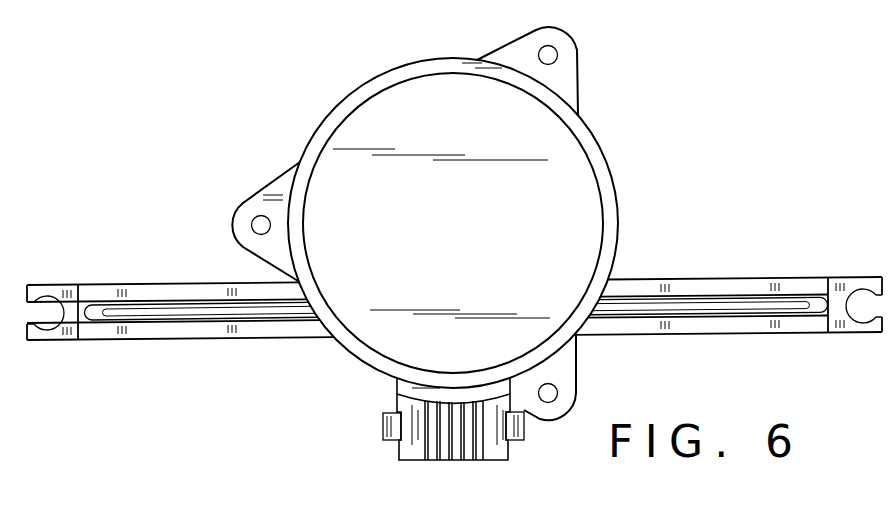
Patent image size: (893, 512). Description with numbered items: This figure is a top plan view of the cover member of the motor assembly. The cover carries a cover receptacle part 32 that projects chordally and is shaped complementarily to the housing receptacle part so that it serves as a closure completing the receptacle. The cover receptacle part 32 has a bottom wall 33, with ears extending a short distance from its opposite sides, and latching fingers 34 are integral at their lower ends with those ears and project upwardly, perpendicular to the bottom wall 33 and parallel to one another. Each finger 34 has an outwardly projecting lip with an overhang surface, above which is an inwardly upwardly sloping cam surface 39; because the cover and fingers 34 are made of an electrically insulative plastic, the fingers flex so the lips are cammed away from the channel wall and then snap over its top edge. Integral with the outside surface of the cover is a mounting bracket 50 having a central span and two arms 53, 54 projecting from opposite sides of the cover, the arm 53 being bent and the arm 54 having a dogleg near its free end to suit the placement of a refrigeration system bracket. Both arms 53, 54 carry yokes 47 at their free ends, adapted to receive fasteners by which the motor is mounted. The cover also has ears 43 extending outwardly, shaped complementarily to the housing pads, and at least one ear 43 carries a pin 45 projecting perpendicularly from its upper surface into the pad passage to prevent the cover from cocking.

The cover receptacle part 32 is at (488, 461).
The bottom wall 33 is at (456, 458).
The latching fingers 34 is at (383, 414).
The cam surface 39 is at (386, 430).
The ears 43 is at (572, 79).
The pin 45 is at (252, 224).
The yokes 47 is at (56, 340).
The mounting bracket 50 is at (736, 280).
The arm 53 is at (778, 334).
The arm 54 is at (163, 341).